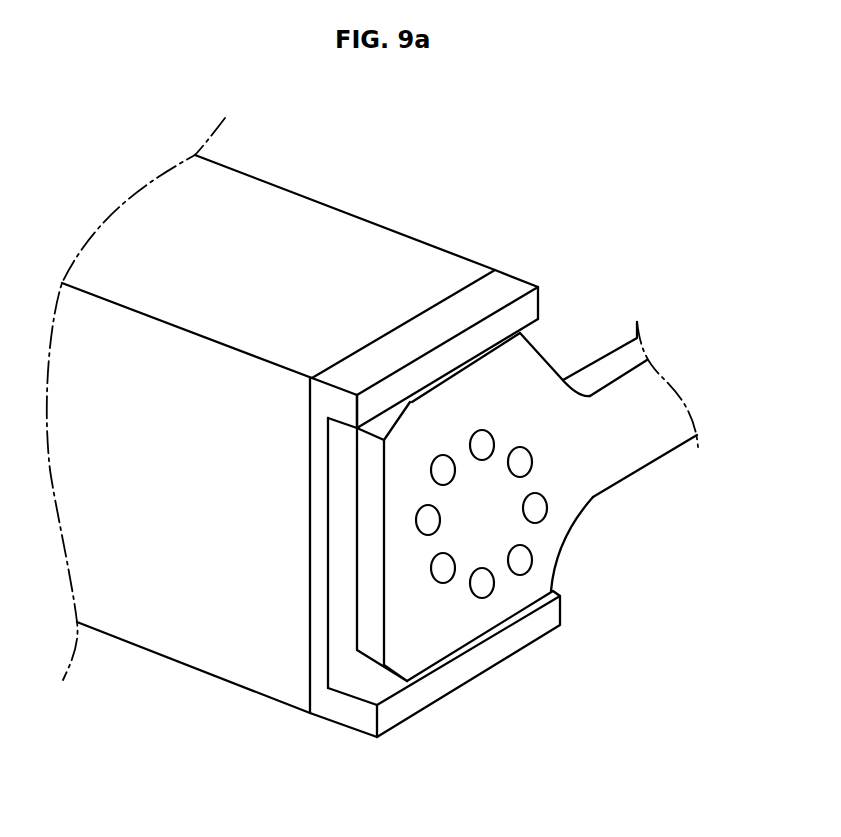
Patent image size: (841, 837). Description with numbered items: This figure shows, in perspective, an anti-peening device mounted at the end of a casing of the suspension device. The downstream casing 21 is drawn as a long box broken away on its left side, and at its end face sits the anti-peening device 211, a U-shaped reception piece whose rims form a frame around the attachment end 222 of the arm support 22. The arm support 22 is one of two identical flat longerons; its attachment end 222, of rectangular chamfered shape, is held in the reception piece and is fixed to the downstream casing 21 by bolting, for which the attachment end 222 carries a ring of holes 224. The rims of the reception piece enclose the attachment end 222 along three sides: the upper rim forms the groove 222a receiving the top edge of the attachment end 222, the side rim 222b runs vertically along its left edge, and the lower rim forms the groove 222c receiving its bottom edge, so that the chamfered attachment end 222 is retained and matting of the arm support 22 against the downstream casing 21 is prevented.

The downstream casing 21 is at (275, 258).
The arm support 22 is at (650, 425).
The anti-peening device 211 is at (522, 635).
The attachment end 222 is at (545, 538).
The top edge groove of mounting plate 222a is at (460, 372).
The side bar of mounting plate 222b is at (370, 567).
The bottom edge groove of mounting plate 222c is at (492, 633).
The through holes 224 is at (446, 570).